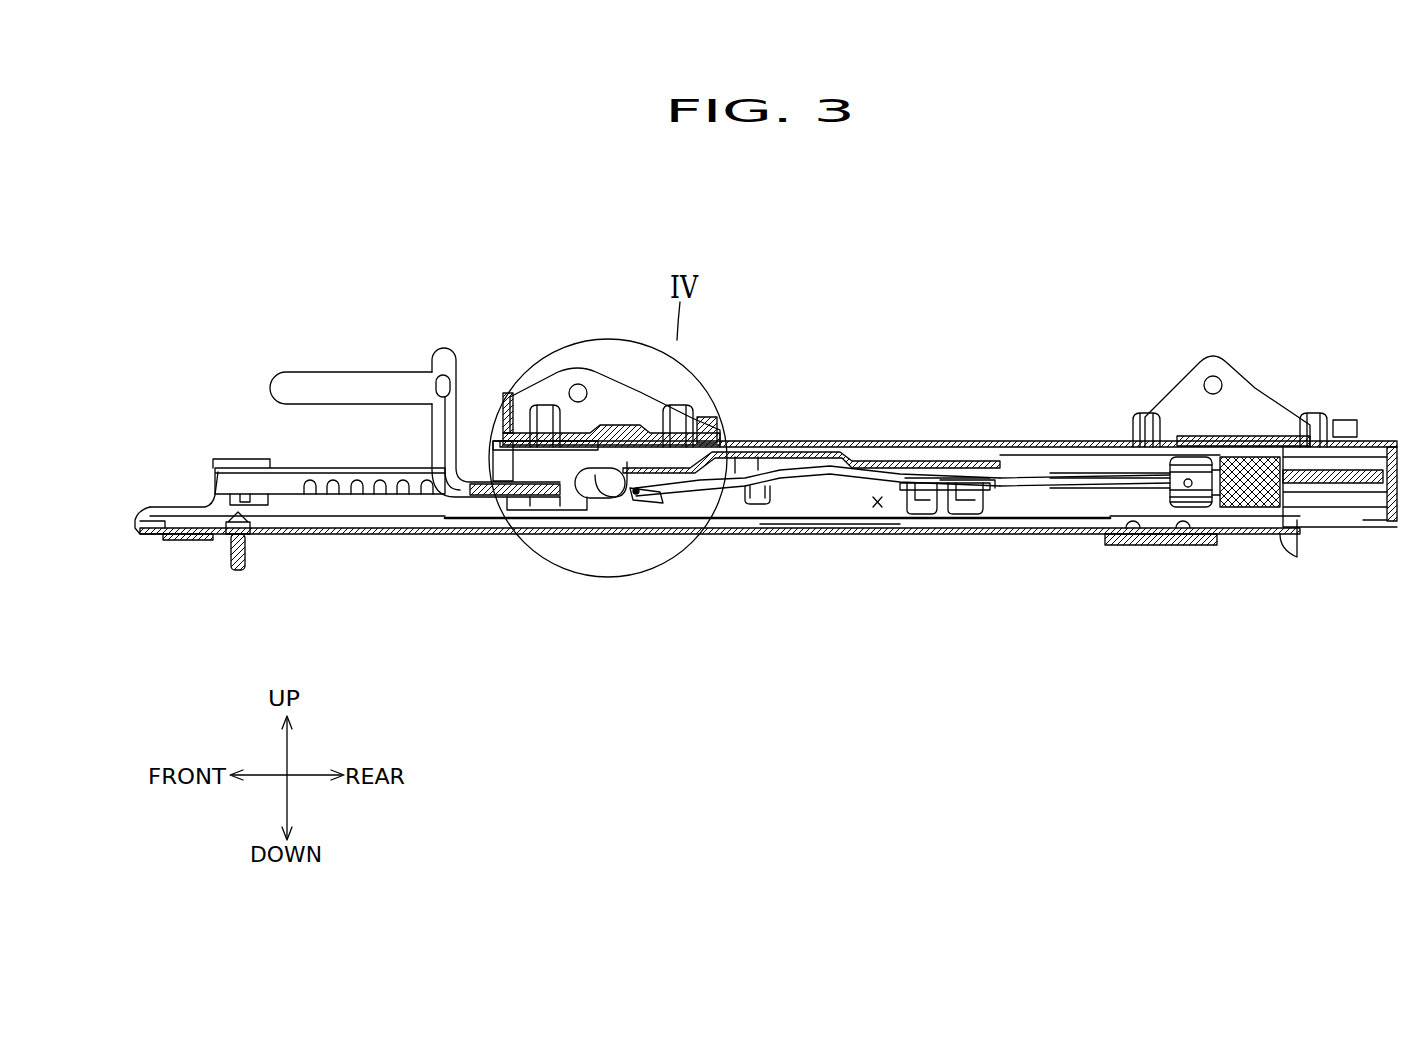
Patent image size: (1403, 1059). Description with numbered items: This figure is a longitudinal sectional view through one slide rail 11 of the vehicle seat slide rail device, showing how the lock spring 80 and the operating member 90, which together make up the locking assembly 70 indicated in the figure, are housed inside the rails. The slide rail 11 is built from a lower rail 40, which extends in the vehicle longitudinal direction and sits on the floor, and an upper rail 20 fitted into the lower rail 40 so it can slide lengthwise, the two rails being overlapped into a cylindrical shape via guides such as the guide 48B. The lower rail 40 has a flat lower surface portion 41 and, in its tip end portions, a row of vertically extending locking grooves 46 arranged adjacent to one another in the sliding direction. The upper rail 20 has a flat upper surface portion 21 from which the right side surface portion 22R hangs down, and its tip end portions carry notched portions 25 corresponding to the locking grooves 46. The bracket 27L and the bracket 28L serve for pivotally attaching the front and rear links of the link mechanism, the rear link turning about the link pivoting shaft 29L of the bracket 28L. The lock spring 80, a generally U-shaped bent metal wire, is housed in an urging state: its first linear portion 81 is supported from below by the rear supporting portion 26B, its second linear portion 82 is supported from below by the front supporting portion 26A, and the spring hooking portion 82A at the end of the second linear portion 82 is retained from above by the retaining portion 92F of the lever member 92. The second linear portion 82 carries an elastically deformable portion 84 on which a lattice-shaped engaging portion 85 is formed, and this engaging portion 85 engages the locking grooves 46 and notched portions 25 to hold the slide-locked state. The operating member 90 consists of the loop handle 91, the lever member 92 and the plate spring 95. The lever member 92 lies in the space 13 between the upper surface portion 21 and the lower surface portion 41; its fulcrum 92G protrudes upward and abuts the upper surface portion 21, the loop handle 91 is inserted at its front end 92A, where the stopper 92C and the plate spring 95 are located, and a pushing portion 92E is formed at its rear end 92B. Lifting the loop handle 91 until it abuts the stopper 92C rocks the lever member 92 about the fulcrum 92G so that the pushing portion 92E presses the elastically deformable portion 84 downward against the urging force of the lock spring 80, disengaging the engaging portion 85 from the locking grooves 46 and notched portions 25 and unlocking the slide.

The slide rail 11 is at (766, 479).
The space 13 is at (878, 510).
The upper rail 20 is at (1009, 460).
The upper surface portion 21 is at (1043, 447).
The right side surface portion 22R is at (1048, 533).
The notched portions 25 is at (920, 514).
The front supporting portion 26A is at (750, 505).
The rear supporting portion 26B is at (1186, 505).
The bracket 27L is at (592, 370).
The bracket 28L is at (1240, 388).
The link pivoting shaft 29L is at (1213, 385).
The lower rail 40 is at (205, 505).
The lower surface portion 41 is at (968, 514).
The locking grooves 46 is at (358, 495).
The guide 48B is at (805, 530).
The operating mechanism 70 is at (775, 469).
The lock spring 80 is at (1083, 483).
The first linear portion 81 is at (1195, 503).
The second linear portion 82 is at (1111, 465).
The spring hooking portion 82A is at (657, 500).
The elastically deformable portion 84 is at (947, 387).
The engaging portion 85 is at (955, 470).
The operating member 90 is at (640, 470).
The loop handle 91 is at (302, 385).
The lever member 92 is at (815, 450).
The front end 92A is at (482, 440).
The rear end 92B is at (978, 485).
The stopper 92C is at (527, 400).
The pushing portion 92E is at (930, 480).
The retaining portion 92F is at (637, 497).
The fulcrum 92G is at (722, 417).
The plate spring 95 is at (600, 513).